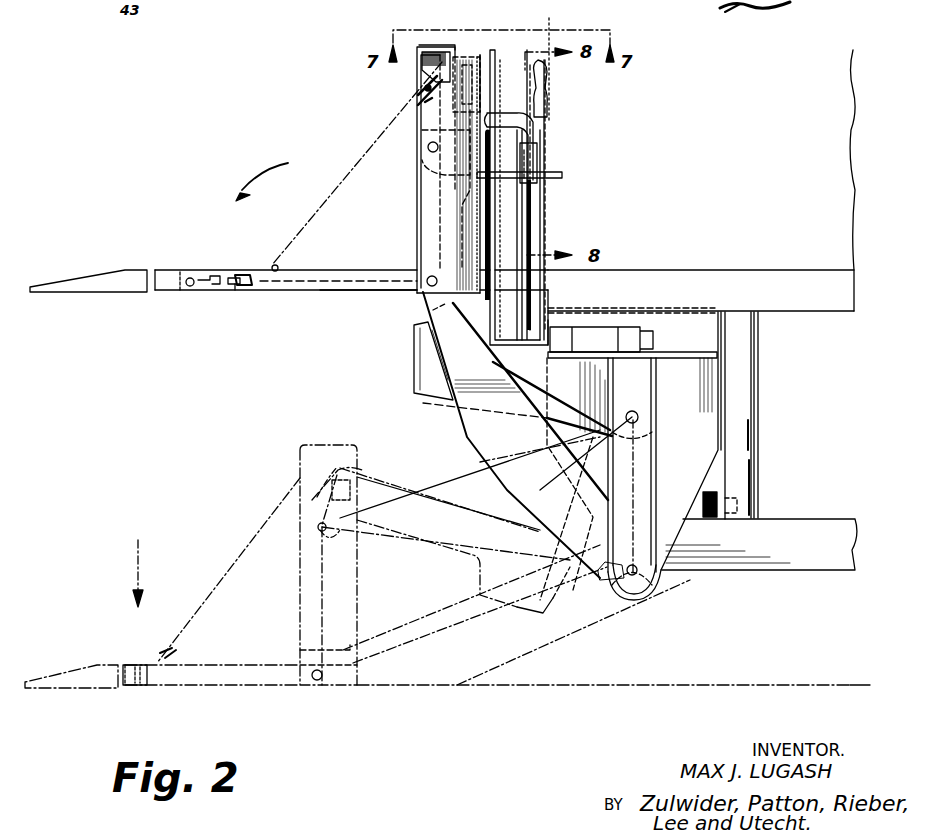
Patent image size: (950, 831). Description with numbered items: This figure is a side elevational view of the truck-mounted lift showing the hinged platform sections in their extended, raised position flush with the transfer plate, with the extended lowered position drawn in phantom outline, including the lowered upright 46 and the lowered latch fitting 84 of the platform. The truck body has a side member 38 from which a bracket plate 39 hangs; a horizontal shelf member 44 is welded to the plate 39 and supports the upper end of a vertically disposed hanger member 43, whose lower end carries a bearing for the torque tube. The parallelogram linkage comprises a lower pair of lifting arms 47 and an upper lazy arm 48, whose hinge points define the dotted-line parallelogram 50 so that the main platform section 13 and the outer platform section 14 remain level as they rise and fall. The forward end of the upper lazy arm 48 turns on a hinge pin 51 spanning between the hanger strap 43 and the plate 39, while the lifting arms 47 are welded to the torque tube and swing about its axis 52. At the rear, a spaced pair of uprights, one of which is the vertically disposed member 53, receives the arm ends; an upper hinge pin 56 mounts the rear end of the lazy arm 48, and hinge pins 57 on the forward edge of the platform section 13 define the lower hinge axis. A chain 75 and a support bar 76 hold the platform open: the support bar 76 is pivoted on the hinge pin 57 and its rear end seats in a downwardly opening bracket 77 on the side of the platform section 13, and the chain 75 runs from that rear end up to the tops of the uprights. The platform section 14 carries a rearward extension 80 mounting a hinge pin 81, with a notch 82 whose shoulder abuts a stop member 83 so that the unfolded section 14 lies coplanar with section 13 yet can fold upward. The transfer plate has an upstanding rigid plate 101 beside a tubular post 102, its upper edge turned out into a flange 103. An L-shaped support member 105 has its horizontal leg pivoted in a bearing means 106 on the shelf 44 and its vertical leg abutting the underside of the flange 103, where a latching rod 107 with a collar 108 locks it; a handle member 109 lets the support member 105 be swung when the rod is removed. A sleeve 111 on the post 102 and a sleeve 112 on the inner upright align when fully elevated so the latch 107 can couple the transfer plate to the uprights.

The main platform section 13 is at (355, 278).
The platform section 14 is at (98, 275).
The side member 38 is at (701, 180).
The plate 39 is at (713, 415).
The hanger member 43 is at (656, 485).
The shelf member 44 is at (700, 353).
The lowered post 46 is at (422, 547).
The lifting arms 47 is at (566, 650).
The upper lazy arm 48 is at (414, 360).
The parallelogram 50 is at (448, 482).
The hinge pin 51 is at (648, 402).
The axis of the torque tube 52 is at (650, 572).
The vertically disposed member 53 is at (417, 198).
The upper hinge pin 56 is at (318, 532).
The hinge pins 57 is at (318, 682).
The chain 75 is at (416, 98).
The support bar 76 is at (345, 296).
The downwardly opening bracket 77 is at (255, 272).
The rearward extension 80 is at (202, 290).
The hinge pin 81 is at (185, 287).
The notch 82 is at (210, 258).
The stop member 83 is at (215, 295).
The latch spring 84 is at (220, 288).
The rigid plate 101 is at (510, 240).
The tubular post 102 is at (432, 60).
The flange 103 is at (530, 143).
The support member 105 is at (560, 318).
The bearing means 106 is at (648, 326).
The latching rod 107 is at (508, 116).
The sleeve or collar 108 is at (520, 172).
The handle member 109 is at (548, 76).
The sleeve 111 is at (482, 62).
The sleeve 112 is at (480, 92).